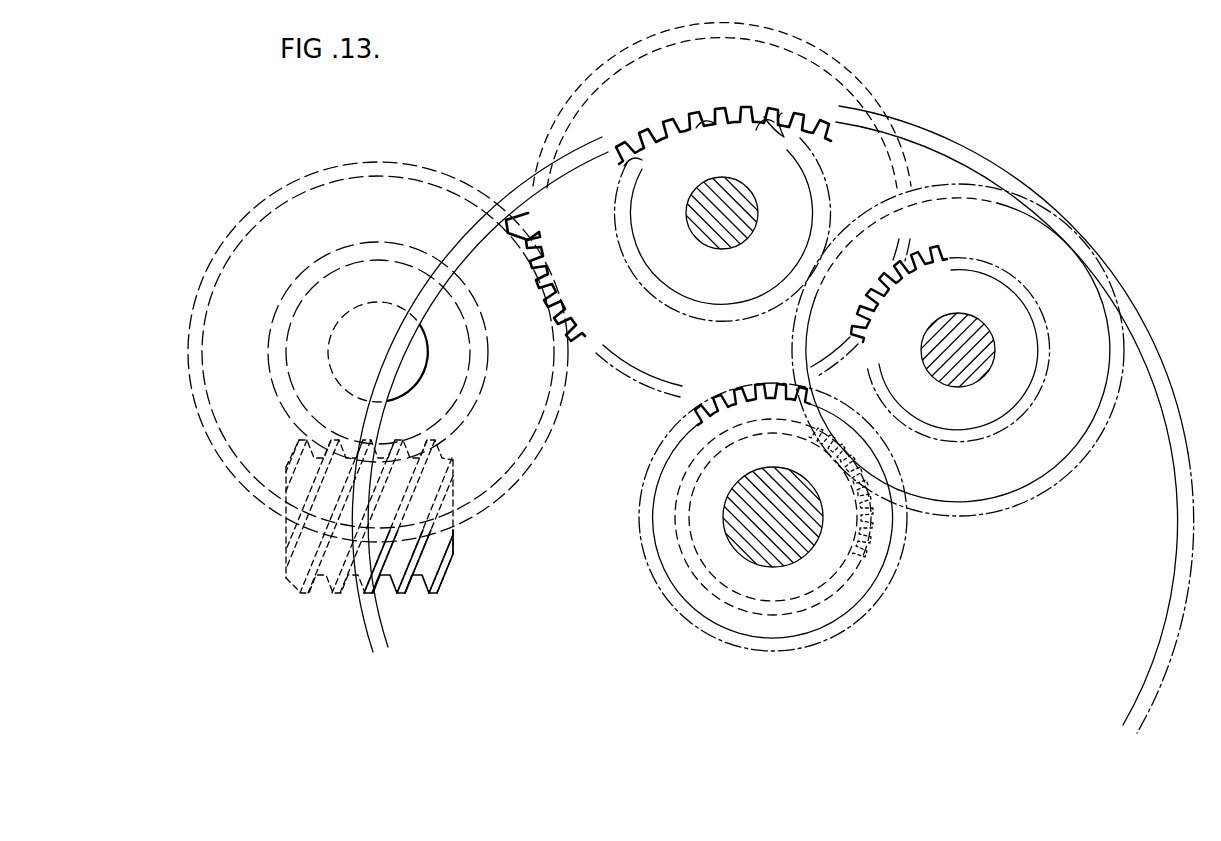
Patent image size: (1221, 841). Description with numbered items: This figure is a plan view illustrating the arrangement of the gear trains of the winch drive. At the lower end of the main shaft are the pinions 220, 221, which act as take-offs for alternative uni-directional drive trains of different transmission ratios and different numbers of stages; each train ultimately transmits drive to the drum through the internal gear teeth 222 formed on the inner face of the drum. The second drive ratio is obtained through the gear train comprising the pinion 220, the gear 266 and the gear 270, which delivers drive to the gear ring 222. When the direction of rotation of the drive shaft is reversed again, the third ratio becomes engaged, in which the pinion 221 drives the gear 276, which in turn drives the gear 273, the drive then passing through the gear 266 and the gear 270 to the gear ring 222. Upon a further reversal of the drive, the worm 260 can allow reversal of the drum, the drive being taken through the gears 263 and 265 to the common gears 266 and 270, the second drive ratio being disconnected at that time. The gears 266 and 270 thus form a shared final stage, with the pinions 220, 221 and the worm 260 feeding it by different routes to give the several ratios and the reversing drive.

The internal gear teeth 222 is at (830, 110).
The gear 270 is at (643, 187).
The gear 266 is at (663, 360).
The gear 263 is at (288, 287).
The gear 265 is at (477, 483).
The worm 260 is at (403, 593).
The pinion 220 is at (655, 495).
The pinion 221 is at (877, 557).
The gear 273 is at (1037, 307).
The gear 276 is at (1025, 475).